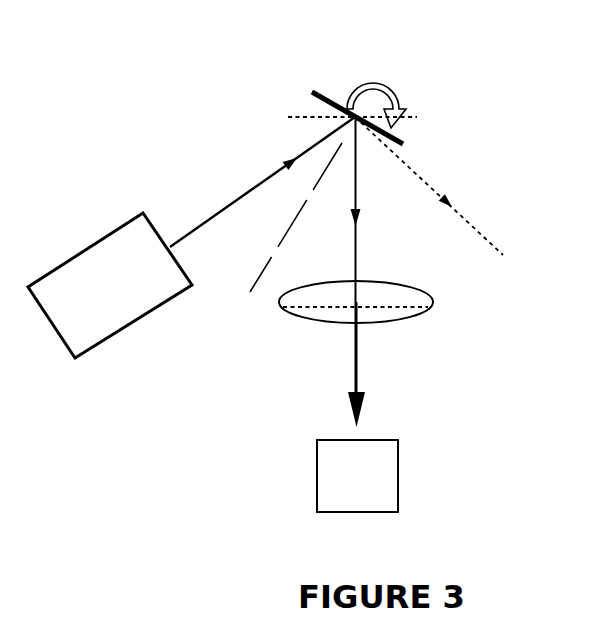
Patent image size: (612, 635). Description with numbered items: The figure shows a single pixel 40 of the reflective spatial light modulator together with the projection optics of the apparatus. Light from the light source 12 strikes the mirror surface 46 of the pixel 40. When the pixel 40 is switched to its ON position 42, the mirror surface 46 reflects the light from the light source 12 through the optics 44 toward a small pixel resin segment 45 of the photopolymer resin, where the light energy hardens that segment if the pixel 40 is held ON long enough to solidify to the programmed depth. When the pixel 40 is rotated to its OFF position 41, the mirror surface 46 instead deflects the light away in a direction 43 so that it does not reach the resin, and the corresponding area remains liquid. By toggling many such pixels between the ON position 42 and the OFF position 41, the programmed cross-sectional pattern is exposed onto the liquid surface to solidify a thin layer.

The light source 12 is at (100, 238).
The pixel 40 is at (368, 86).
The OFF position 41 is at (418, 117).
The ON position 42 is at (403, 143).
The deflection direction 43 is at (444, 197).
The optics 44 is at (386, 323).
The pixel resin segment 45 is at (398, 487).
The mirror surface 46 is at (312, 90).